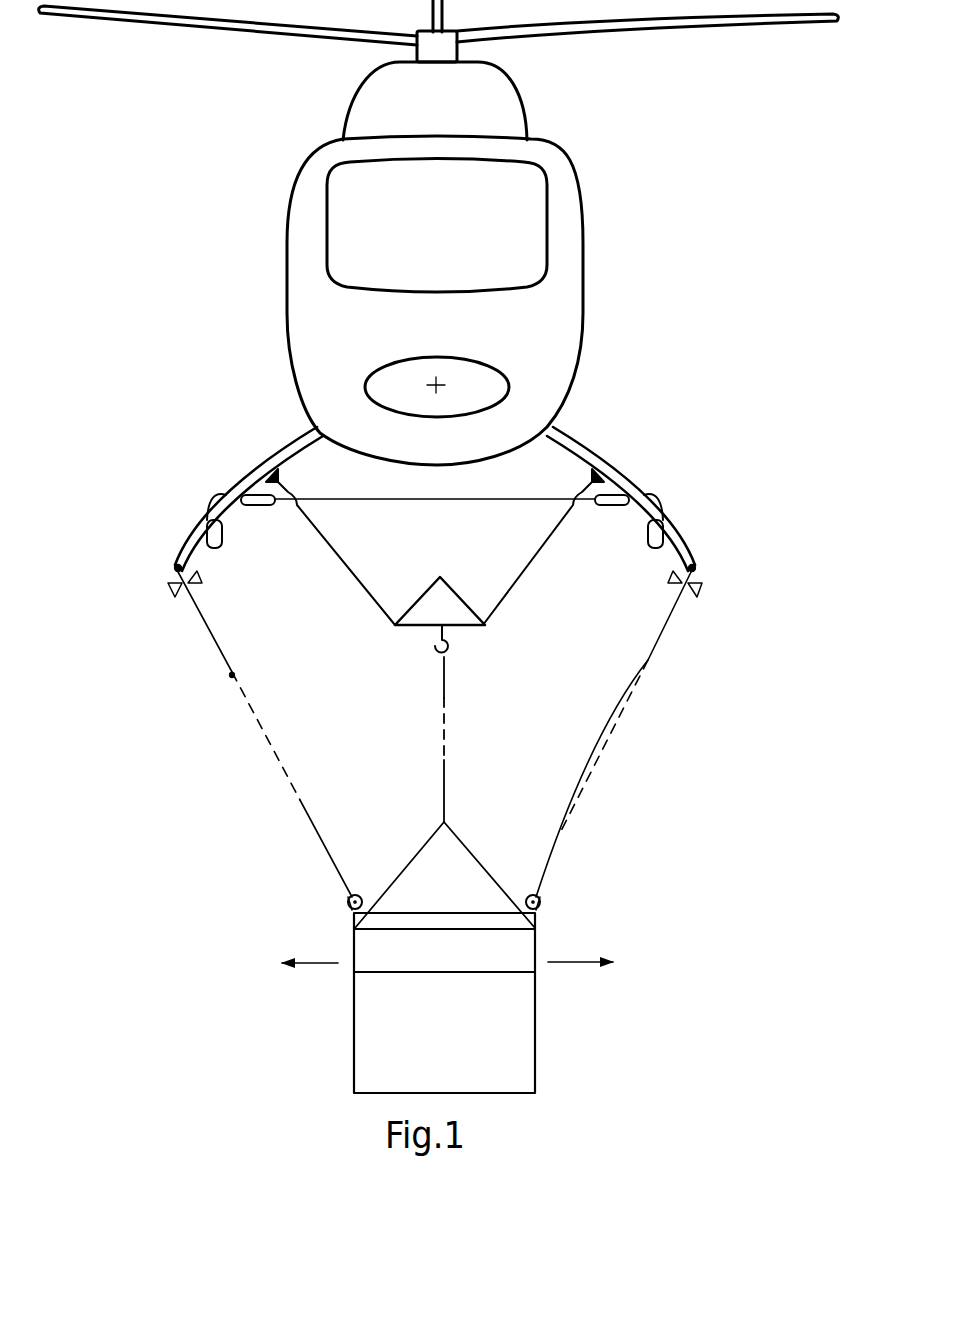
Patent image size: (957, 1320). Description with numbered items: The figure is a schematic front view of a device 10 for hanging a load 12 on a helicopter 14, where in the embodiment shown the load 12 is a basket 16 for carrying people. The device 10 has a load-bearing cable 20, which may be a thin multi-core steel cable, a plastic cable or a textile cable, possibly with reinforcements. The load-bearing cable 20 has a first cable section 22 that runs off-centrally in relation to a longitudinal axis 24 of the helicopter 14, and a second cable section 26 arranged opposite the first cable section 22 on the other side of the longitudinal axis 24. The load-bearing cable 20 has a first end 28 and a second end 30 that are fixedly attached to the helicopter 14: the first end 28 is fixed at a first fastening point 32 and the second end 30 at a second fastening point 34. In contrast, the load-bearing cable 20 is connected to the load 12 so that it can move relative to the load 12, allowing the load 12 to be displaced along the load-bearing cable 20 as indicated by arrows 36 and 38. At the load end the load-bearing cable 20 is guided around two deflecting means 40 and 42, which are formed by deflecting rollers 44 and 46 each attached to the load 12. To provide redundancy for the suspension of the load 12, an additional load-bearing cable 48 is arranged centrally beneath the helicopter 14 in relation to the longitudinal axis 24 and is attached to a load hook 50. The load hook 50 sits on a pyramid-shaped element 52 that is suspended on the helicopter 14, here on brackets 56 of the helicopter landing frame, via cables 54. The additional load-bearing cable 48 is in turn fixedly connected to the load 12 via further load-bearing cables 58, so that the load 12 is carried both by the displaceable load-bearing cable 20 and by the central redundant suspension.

The device 10 is at (208, 754).
The load 12 is at (384, 1003).
The helicopter 14 is at (608, 363).
The basket 16 is at (508, 1050).
The load-bearing cable 20 is at (210, 649).
The first cable section 22 is at (297, 810).
The longitudinal axis 24 is at (437, 388).
The second cable section 26 is at (650, 665).
The first end 28 is at (172, 581).
The second end 30 is at (698, 574).
The first fastening point 32 is at (177, 567).
The second fastening point 34 is at (693, 568).
The arrow 36 is at (312, 962).
The arrow 38 is at (580, 965).
The deflecting means 40 is at (355, 890).
The deflecting means 42 is at (533, 890).
The deflecting roller 44 is at (348, 900).
The deflecting roller 46 is at (545, 897).
The additional load-bearing cable 48 is at (444, 695).
The load hook 50 is at (452, 645).
The pyramid-shaped element 52 is at (442, 603).
The cables 54 is at (335, 558).
The brackets 56 is at (265, 462).
The further load-bearing cables 58 is at (418, 850).